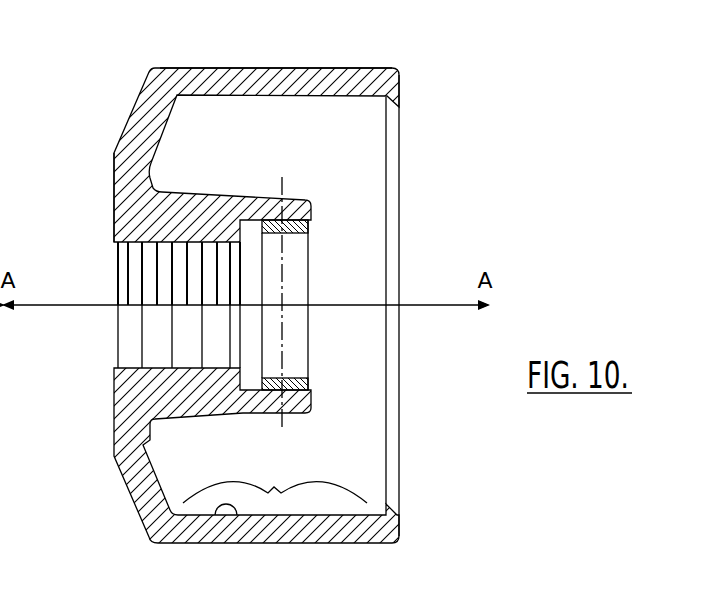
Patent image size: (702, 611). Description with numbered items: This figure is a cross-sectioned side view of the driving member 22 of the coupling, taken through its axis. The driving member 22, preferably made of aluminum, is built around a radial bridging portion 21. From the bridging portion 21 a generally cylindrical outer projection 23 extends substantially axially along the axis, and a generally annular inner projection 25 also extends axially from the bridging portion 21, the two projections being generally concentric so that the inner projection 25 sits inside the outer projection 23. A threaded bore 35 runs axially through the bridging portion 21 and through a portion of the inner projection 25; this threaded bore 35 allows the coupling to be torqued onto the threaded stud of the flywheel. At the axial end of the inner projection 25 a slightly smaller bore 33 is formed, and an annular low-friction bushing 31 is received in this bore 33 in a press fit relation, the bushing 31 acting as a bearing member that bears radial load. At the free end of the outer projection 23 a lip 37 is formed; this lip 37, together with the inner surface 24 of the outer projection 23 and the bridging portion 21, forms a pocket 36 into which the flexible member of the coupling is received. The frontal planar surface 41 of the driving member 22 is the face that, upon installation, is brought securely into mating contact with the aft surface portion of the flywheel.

The radial bridging portion 21 is at (118, 195).
The driving member 22 is at (129, 96).
The outer projection 23 is at (327, 72).
The inner surface 24 is at (217, 508).
The inner projection 25 is at (293, 202).
The bushing 31 is at (303, 382).
The bore 33 is at (290, 232).
The threaded bore 35 is at (148, 365).
The pocket 36 is at (277, 488).
The lip 37 is at (393, 500).
The frontal planar surface 41 is at (112, 410).